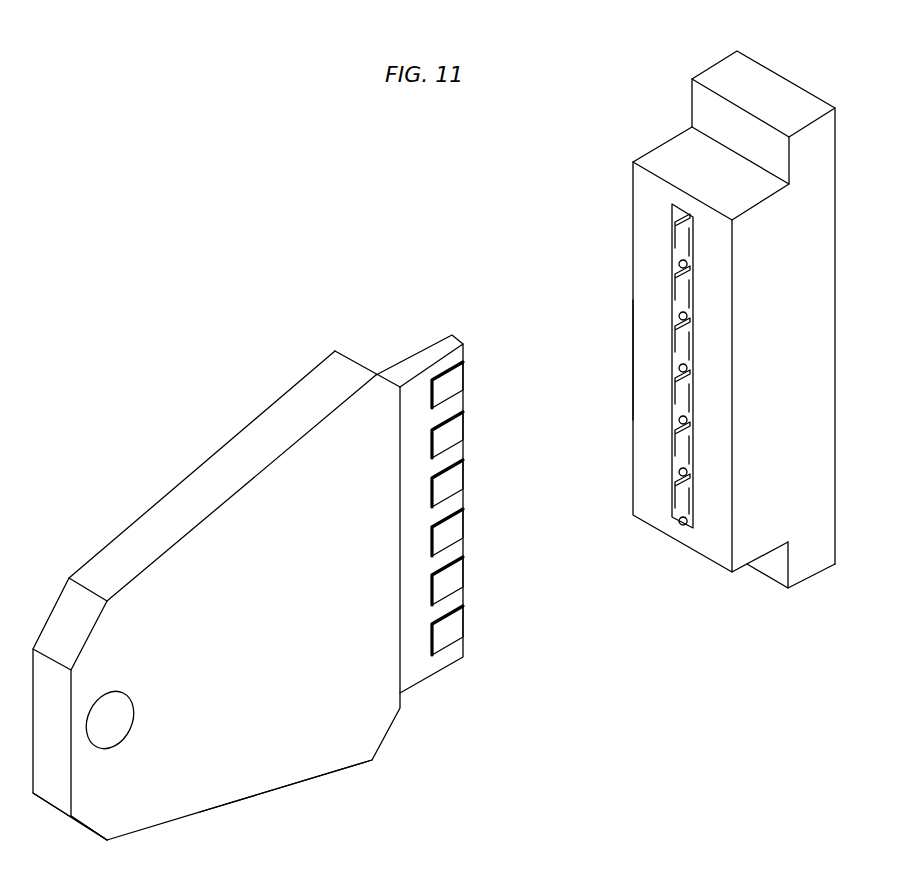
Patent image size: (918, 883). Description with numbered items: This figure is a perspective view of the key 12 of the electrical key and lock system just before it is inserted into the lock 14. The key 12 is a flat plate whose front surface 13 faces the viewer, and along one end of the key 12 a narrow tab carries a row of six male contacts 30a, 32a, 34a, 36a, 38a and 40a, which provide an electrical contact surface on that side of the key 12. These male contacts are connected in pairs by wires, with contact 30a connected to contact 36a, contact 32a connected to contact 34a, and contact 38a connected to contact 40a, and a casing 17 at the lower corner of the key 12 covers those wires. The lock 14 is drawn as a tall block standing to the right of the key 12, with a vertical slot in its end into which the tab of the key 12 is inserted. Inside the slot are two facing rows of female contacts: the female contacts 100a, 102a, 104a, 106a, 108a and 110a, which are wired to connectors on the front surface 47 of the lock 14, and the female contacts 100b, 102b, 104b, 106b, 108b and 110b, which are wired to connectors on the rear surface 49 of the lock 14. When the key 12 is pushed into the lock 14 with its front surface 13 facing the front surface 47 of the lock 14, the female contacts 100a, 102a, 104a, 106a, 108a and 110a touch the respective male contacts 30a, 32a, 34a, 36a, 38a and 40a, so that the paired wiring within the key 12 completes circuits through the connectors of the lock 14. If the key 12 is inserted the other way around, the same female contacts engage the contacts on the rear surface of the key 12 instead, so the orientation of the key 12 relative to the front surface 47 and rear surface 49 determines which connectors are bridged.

The key 12 is at (218, 473).
The front surface 13 is at (242, 765).
The lock 14 is at (747, 82).
The casing 17 is at (53, 783).
The male contact 30a is at (466, 380).
The male contact 32a is at (466, 430).
The male contact 34a is at (466, 480).
The male contact 36a is at (466, 530).
The male contact 38a is at (466, 578).
The male contact 40a is at (466, 628).
The front surface 47 is at (805, 565).
The rear surface 49 is at (632, 353).
The female contact 100a is at (692, 273).
The female contact 100b is at (673, 238).
The female contact 102a is at (692, 323).
The female contact 102b is at (673, 279).
The female contact 104a is at (692, 370).
The female contact 104b is at (673, 337).
The female contact 106a is at (692, 417).
The female contact 106b is at (673, 392).
The female contact 108a is at (692, 470).
The female contact 108b is at (673, 438).
The female contact 110a is at (692, 518).
The female contact 110b is at (673, 485).